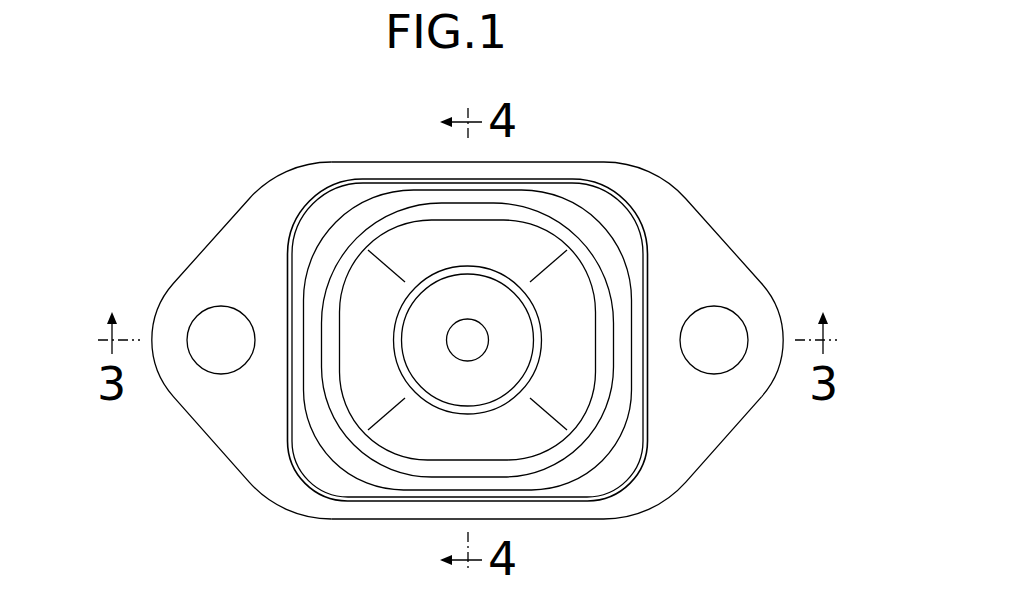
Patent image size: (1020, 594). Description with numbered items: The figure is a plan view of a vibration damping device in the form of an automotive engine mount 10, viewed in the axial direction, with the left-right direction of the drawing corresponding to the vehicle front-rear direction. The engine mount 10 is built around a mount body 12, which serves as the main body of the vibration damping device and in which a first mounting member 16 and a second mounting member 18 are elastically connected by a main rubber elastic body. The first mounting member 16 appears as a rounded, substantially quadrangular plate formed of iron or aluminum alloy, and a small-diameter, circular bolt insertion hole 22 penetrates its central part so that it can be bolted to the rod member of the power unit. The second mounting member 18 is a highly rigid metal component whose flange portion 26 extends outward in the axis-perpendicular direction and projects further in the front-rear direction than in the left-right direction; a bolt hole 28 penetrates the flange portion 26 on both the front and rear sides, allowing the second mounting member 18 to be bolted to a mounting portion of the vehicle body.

The engine mount 10 is at (714, 110).
The mount body 12 is at (722, 188).
The first mounting member 16 is at (326, 216).
The second mounting member 18 is at (690, 486).
The bolt insertion hole 22 is at (462, 350).
The flange portion 26 is at (250, 427).
The bolt hole 28 is at (225, 316).